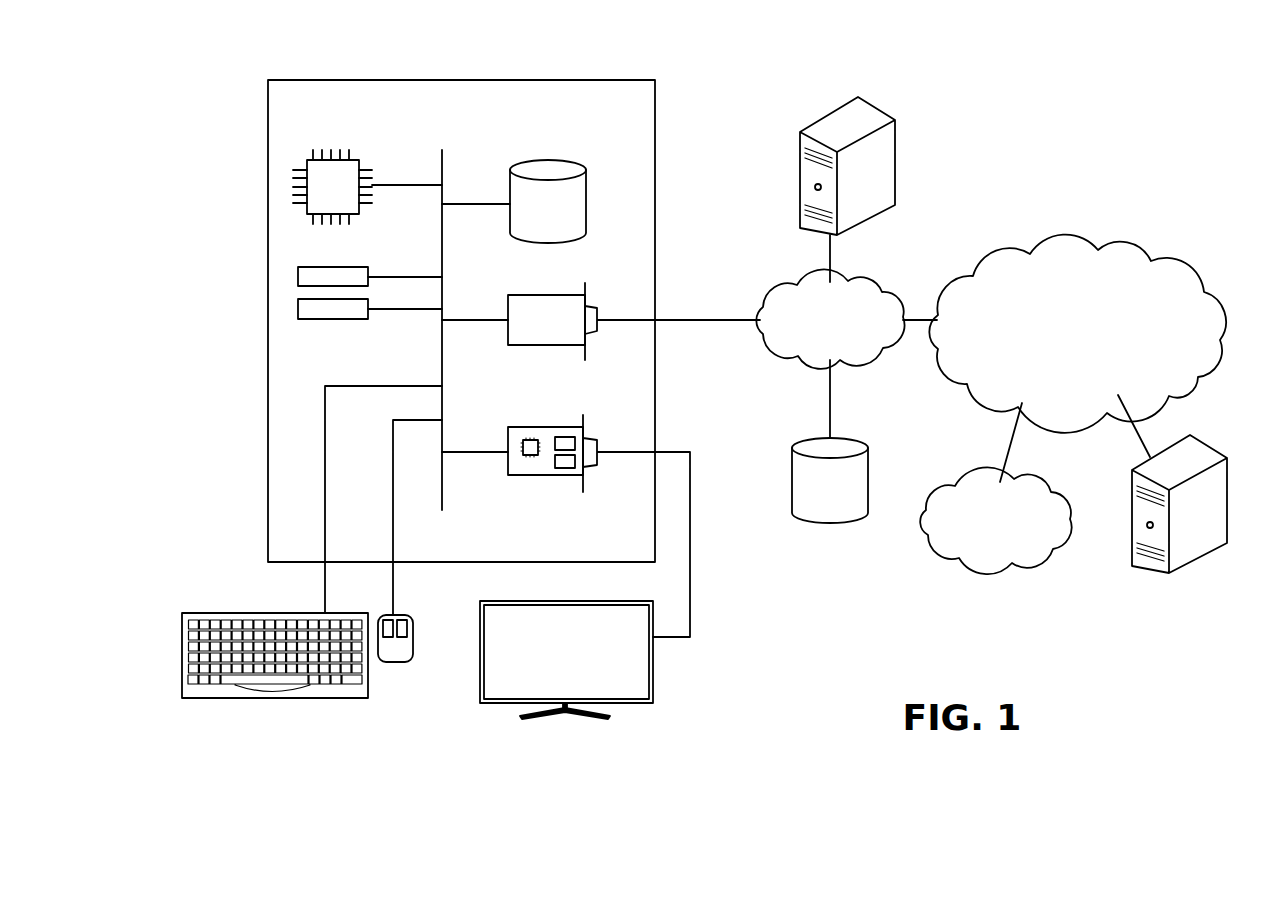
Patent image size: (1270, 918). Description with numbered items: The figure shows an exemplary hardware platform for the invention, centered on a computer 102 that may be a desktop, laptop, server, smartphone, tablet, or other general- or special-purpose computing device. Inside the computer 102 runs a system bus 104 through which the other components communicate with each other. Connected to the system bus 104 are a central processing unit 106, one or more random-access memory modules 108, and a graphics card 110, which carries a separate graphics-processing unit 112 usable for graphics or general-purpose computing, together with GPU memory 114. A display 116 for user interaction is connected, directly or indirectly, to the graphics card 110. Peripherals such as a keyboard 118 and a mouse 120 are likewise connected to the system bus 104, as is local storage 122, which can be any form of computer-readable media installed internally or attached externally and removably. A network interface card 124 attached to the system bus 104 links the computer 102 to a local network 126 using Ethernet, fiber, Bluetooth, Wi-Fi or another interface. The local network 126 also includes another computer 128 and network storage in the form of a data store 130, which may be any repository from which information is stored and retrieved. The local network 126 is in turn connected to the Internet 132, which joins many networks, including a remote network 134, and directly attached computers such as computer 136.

The computer 102 is at (612, 80).
The system bus 104 is at (447, 156).
The central processing unit 106 is at (357, 158).
The random-access memory modules 108 is at (372, 307).
The graphics card 110 is at (580, 511).
The graphics-processing unit 112 is at (530, 456).
The GPU memory 114 is at (565, 468).
The display 116 is at (655, 686).
The keyboard 118 is at (277, 698).
The mouse 120 is at (393, 662).
The local storage 122 is at (590, 185).
The network interface card 124 is at (508, 300).
The local network 126 is at (880, 282).
The computer 128 is at (883, 107).
The data store 130 is at (863, 440).
The Internet 132 is at (1118, 248).
The remote network 134 is at (1045, 480).
The computer 136 is at (1205, 442).